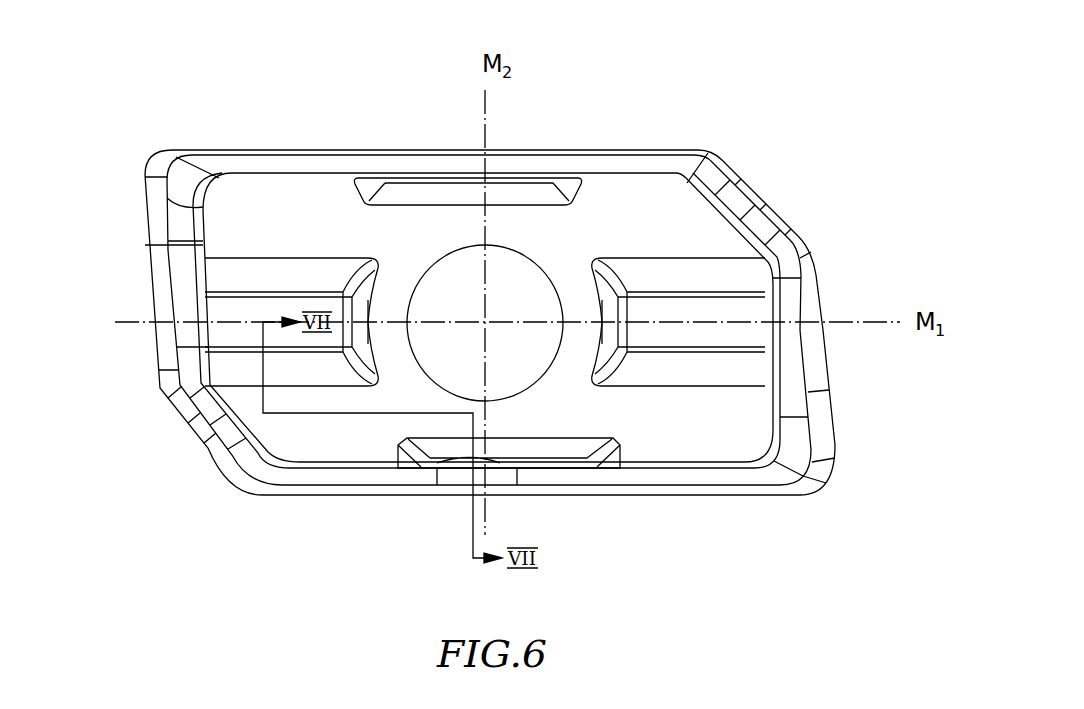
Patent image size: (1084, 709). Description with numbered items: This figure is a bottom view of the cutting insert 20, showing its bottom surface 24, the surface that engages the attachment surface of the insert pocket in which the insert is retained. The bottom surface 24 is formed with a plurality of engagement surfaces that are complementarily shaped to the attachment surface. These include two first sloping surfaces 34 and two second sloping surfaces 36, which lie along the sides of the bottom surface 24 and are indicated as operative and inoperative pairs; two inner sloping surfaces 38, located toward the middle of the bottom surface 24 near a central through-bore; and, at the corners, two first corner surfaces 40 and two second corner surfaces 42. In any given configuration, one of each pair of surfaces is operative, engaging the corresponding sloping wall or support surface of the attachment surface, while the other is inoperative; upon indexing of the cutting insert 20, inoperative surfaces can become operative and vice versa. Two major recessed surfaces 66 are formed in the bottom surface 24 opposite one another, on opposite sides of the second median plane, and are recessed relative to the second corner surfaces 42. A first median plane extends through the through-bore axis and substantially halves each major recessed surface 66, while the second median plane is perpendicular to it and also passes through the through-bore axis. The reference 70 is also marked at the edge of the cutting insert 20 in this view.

The cutting insert 20 is at (232, 542).
The bottom surface 24 is at (588, 200).
The first sloping surfaces 34 is at (227, 273).
The second sloping surfaces 36 is at (243, 372).
The inner sloping surfaces 38 is at (423, 197).
The first corner surfaces 40 is at (670, 190).
The second corner surfaces 42 is at (260, 208).
The major recessed surfaces 66 is at (237, 324).
The rim edge 70 is at (237, 150).